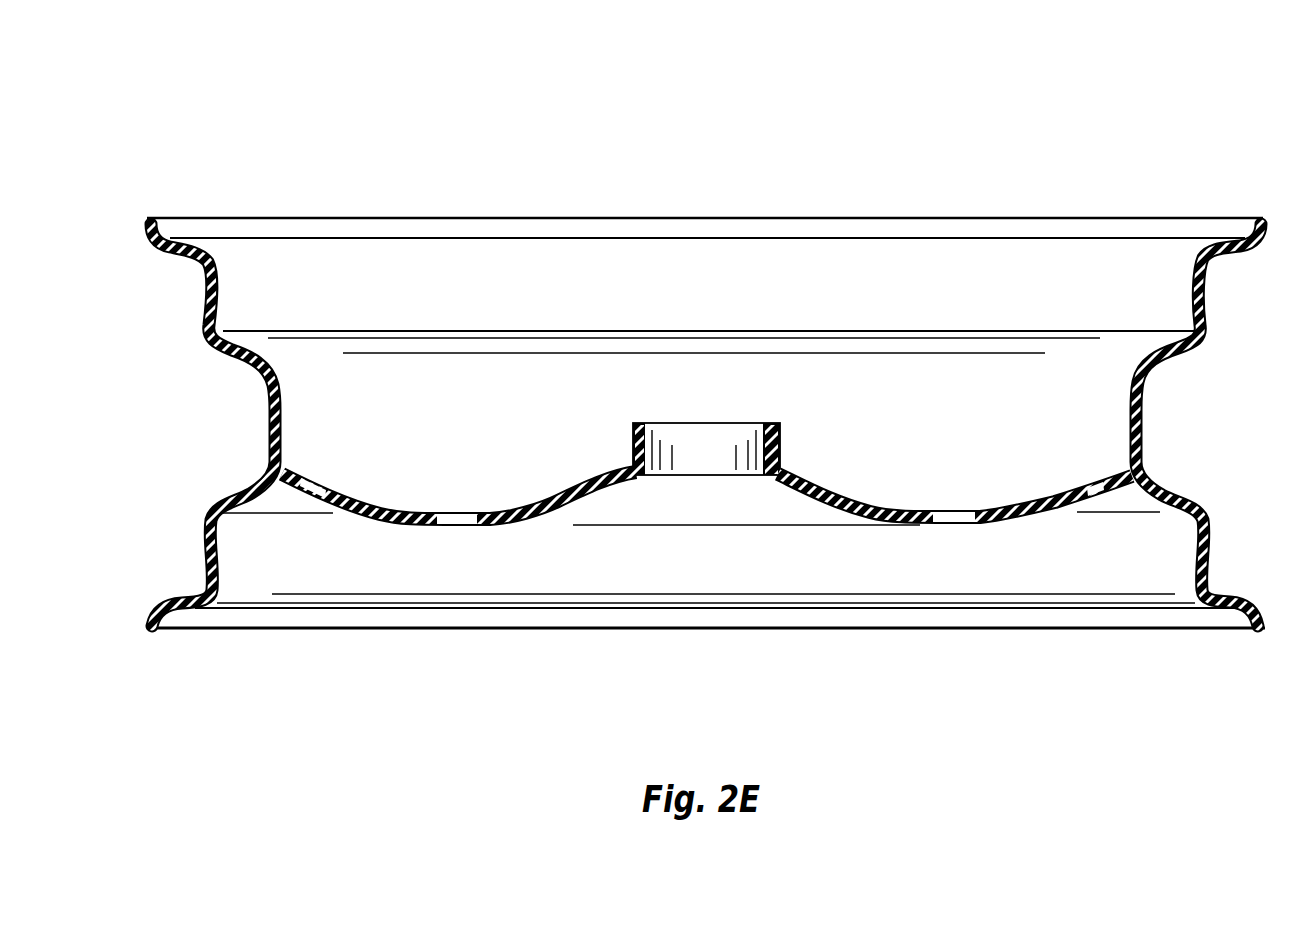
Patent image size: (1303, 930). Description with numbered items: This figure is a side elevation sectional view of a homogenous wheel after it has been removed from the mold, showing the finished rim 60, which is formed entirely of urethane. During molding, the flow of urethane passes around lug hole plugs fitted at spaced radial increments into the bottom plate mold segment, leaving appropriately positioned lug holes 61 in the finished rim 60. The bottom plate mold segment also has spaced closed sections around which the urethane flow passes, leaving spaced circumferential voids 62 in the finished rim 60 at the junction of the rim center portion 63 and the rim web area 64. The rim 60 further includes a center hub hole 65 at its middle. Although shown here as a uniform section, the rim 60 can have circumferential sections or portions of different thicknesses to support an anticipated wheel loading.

The wheel rim 60 is at (1034, 175).
The lug holes 61 is at (453, 525).
The circumferential voids 62 is at (303, 487).
The rim center portion 63 is at (577, 515).
The rim web area 64 is at (268, 410).
The center hub hole 65 is at (645, 455).